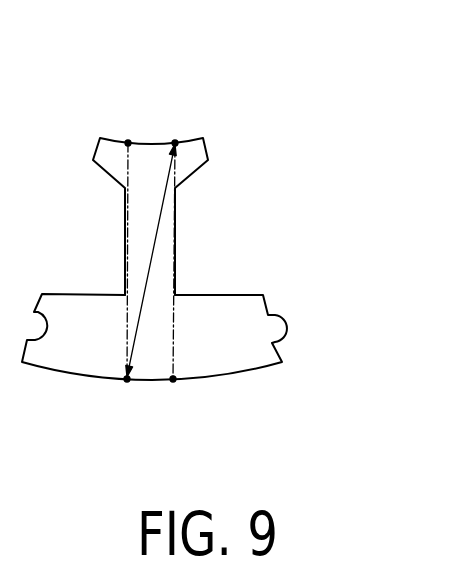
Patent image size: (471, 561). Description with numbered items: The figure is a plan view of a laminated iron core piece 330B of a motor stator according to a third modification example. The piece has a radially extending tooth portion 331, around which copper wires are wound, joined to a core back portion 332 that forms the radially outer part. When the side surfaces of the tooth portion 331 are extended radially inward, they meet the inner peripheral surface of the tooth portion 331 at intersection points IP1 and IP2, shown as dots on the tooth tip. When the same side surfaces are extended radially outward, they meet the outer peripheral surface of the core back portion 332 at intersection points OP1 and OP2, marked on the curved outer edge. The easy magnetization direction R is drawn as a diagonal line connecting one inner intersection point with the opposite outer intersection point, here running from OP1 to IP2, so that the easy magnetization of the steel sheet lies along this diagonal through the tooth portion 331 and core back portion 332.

The stator core piece (split core) 330B is at (218, 229).
The tooth portion 331 is at (176, 274).
The core back portion 332 is at (237, 375).
The intersection point IP1 is at (128, 143).
The intersection point IP2 is at (175, 143).
The intersection point OP1 is at (127, 379).
The intersection point OP2 is at (173, 379).
The easy magnetization direction R is at (158, 237).